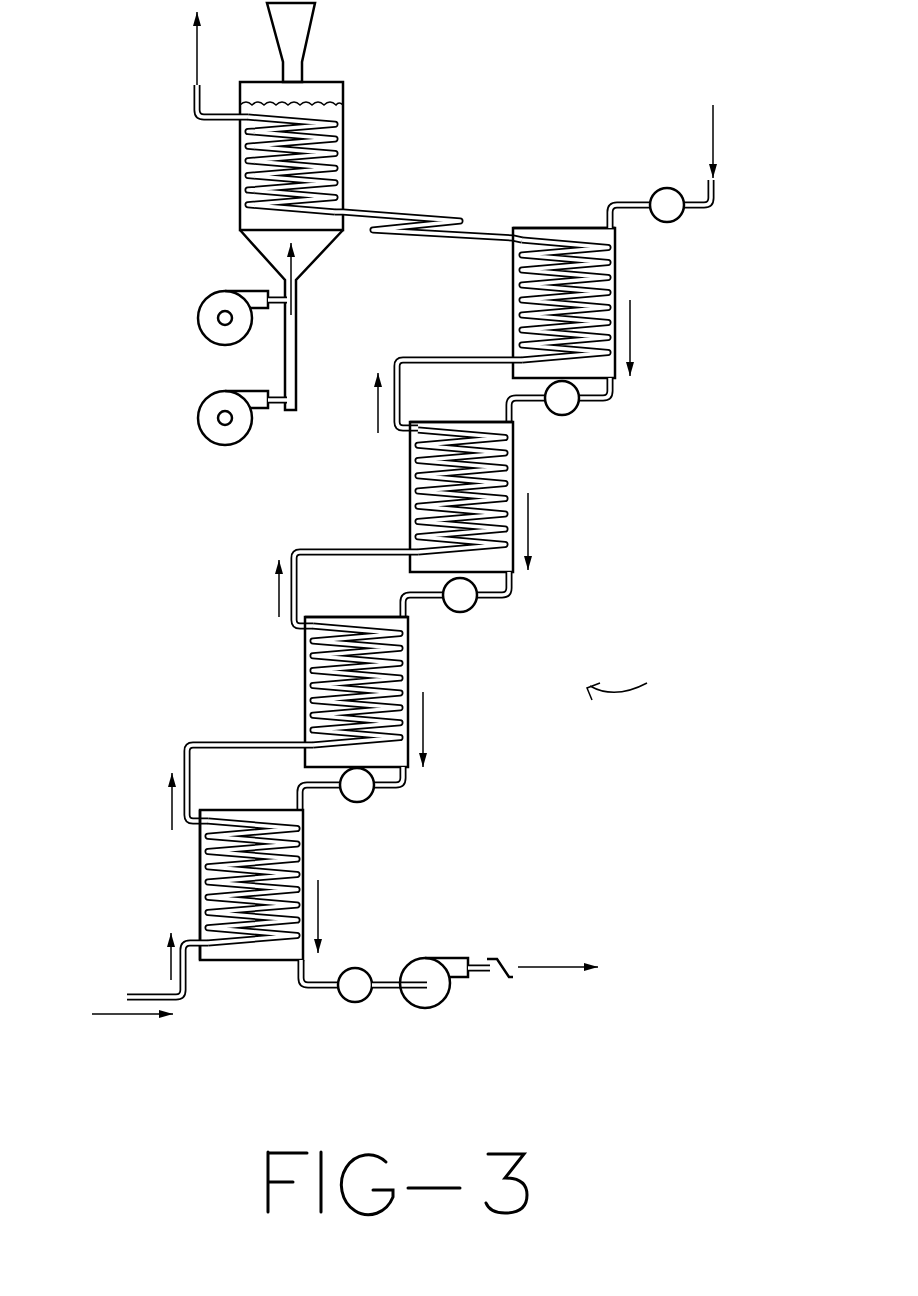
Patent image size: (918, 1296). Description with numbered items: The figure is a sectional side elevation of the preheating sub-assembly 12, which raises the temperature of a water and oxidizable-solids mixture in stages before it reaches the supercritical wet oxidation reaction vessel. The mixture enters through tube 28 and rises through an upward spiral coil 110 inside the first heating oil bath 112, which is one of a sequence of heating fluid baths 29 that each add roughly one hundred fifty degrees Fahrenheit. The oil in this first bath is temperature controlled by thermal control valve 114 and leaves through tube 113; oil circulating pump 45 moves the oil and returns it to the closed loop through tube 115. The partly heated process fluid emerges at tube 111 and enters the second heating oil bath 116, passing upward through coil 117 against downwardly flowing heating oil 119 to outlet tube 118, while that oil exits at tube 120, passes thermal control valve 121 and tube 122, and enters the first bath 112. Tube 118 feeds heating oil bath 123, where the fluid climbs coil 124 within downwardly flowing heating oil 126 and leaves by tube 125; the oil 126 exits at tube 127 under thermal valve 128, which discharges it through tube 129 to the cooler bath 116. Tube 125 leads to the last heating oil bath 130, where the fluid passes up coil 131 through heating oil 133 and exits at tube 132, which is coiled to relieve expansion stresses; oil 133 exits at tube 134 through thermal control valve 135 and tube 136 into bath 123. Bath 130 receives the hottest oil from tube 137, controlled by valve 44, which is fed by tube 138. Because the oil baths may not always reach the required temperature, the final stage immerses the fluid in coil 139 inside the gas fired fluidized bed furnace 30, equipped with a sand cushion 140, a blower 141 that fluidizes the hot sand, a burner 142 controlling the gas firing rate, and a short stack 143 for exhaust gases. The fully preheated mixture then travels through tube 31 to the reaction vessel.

The preheating sub-assembly 12 is at (643, 673).
The tube 28 is at (128, 994).
The heating fluid baths 29 is at (200, 925).
The gas fired fluidized bed furnace 30 is at (240, 176).
The tube 31 is at (192, 100).
The valve 44 is at (677, 218).
The oil circulating pump 45 is at (437, 952).
The upward spiral coil 110 is at (232, 962).
The tube 111 is at (184, 768).
The heating oil bath 112 is at (300, 840).
The tube 113 is at (303, 992).
The thermal control valve 114 is at (358, 968).
The tube 115 is at (483, 975).
The heating oil bath 116 is at (305, 652).
The coil 117 is at (313, 683).
The outlet tube 118 is at (292, 558).
The heating oil 119 is at (382, 593).
The tube 120 is at (407, 777).
The thermal control valve 121 is at (372, 790).
The tube 122 is at (300, 805).
The heating oil bath 123 is at (410, 475).
The coil 124 is at (418, 517).
The tube 125 is at (393, 370).
The heating oil 126 is at (482, 388).
The tube 127 is at (502, 600).
The thermal valve 128 is at (472, 608).
The tube 129 is at (422, 597).
The heating oil bath 130 is at (512, 297).
The coil 131 is at (512, 337).
The tube 132 is at (443, 222).
The heating oil 133 is at (578, 235).
The tube 134 is at (612, 396).
The thermal control valve 135 is at (572, 415).
The tube 136 is at (527, 412).
The tube 137 is at (633, 198).
The tube 138 is at (717, 183).
The coil 139 is at (248, 153).
The sand cushion 140 is at (245, 228).
The blower 141 is at (210, 440).
The burner 142 is at (210, 338).
The short stack 143 is at (303, 42).